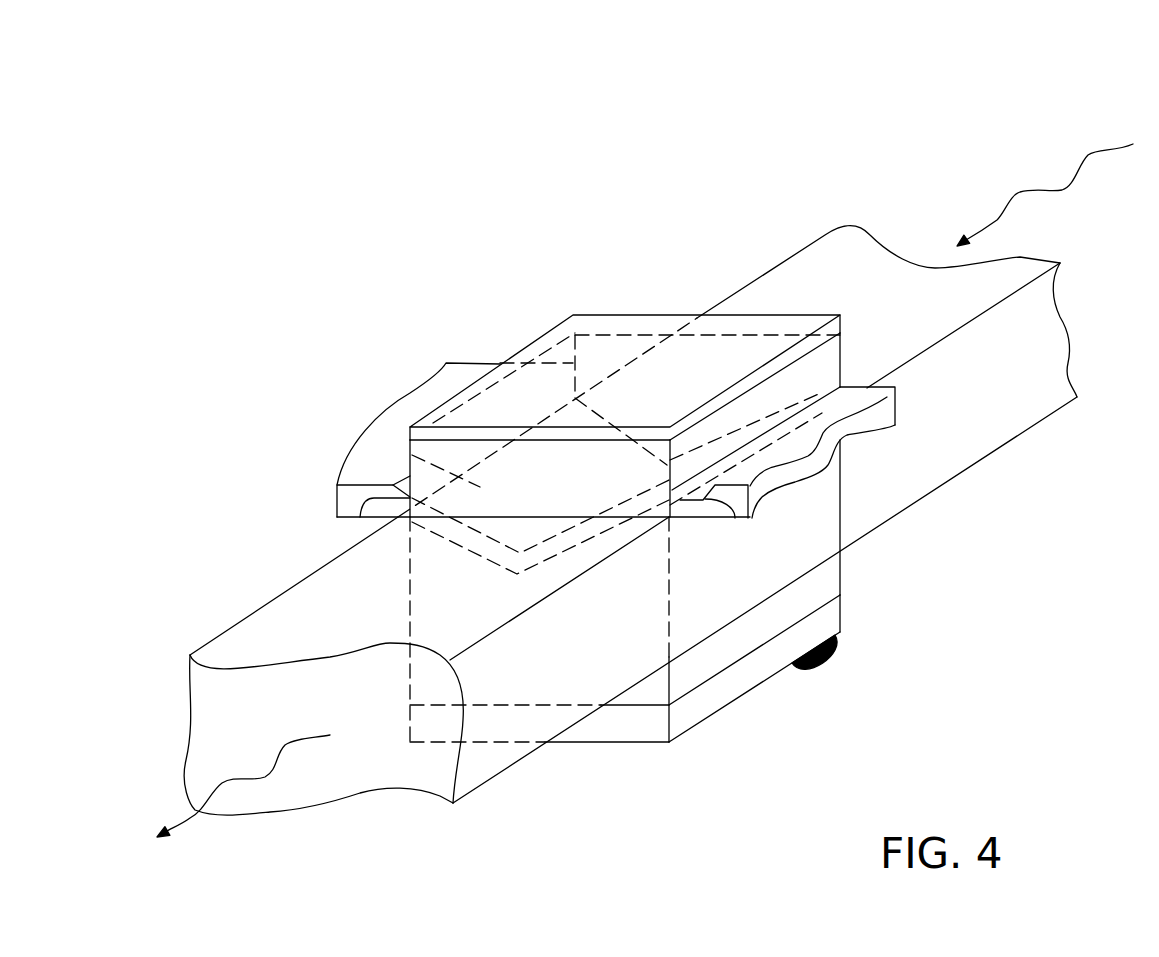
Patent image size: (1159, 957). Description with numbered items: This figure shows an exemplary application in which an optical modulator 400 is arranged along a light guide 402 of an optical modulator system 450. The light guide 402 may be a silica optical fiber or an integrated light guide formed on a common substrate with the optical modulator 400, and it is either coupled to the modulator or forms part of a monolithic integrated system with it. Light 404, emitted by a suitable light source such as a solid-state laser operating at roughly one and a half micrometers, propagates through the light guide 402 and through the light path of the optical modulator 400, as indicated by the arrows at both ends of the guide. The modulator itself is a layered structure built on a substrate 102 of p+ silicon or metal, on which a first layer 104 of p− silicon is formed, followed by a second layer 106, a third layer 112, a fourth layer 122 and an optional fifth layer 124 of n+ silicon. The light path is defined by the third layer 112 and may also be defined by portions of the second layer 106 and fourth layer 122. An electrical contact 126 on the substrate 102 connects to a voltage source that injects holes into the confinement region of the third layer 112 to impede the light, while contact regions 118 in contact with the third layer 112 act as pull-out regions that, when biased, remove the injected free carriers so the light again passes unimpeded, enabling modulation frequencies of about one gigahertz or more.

The substrate 102 is at (655, 728).
The first layer 104 is at (632, 700).
The second layer 106 is at (823, 530).
The third layer 112 is at (468, 535).
The contact regions 118 is at (363, 462).
The fourth layer 122 is at (410, 457).
The fifth layer 124 is at (552, 330).
The electrical contact 126 is at (822, 657).
The optical modulator 400 is at (622, 255).
The light guide 402 is at (388, 775).
The light 404 is at (1073, 192).
The optical modulator system 450 is at (905, 97).